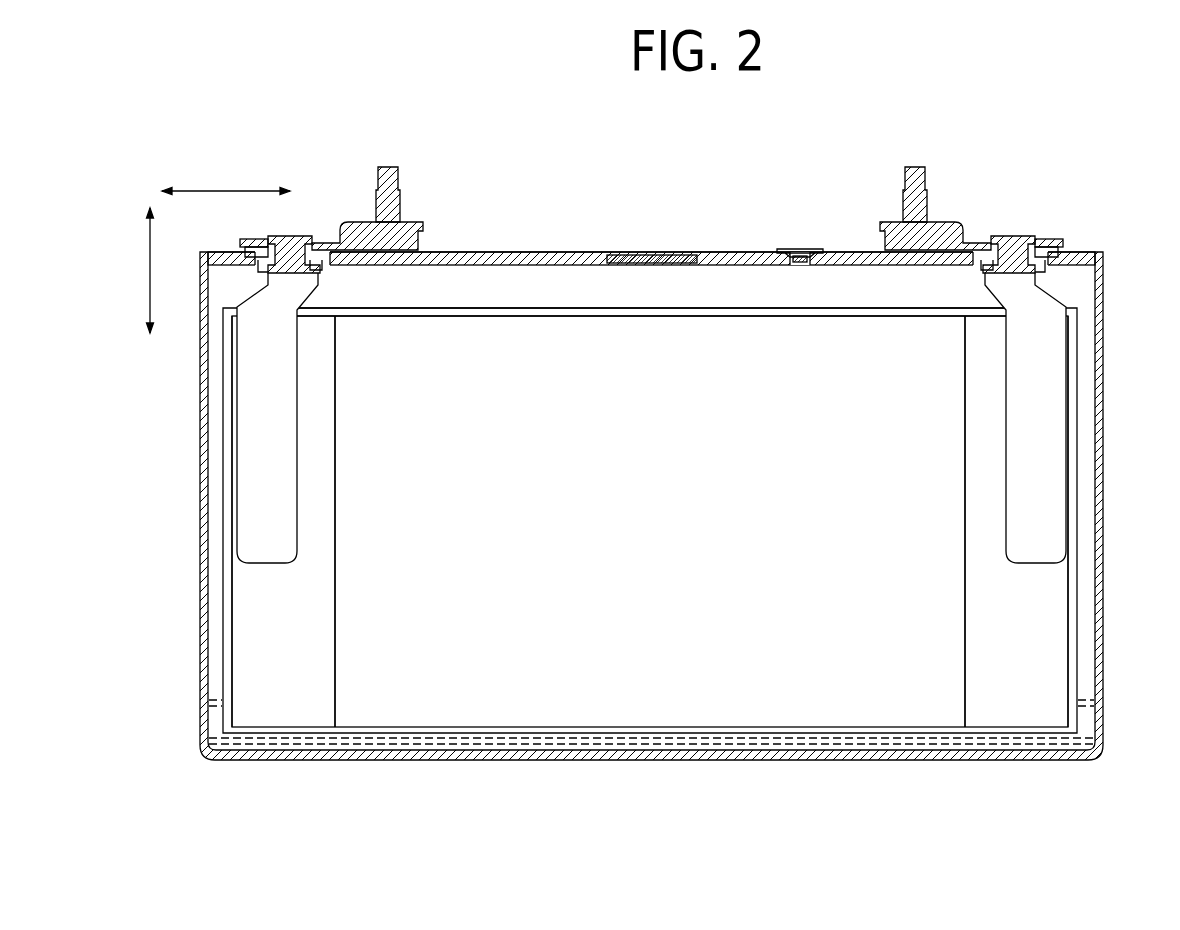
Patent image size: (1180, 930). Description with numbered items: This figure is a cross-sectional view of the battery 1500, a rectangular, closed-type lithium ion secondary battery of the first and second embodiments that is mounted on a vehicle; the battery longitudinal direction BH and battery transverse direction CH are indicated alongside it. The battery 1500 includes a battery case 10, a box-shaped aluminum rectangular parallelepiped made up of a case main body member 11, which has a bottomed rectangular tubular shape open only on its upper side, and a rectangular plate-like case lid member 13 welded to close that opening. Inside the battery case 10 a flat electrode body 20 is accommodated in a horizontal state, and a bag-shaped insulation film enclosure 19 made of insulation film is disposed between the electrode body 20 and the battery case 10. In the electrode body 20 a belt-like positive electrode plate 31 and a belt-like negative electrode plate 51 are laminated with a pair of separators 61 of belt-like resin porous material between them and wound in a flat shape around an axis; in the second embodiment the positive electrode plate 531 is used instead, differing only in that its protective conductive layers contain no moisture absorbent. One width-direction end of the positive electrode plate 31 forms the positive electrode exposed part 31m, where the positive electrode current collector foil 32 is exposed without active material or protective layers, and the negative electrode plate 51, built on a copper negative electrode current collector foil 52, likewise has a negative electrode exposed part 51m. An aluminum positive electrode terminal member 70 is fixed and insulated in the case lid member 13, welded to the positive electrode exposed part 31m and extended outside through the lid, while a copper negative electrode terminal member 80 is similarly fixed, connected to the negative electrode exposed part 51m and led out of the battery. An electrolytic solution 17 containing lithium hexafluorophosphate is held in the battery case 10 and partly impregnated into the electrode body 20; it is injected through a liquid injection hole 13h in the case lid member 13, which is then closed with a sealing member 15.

The battery 1500 is at (1035, 200).
The battery case 10 is at (651, 502).
The case main body member 11 is at (417, 760).
The case lid member 13 is at (538, 252).
The liquid injection hole 13h is at (803, 264).
The sealing member 15 is at (800, 249).
The electrolytic solution 17 is at (613, 680).
The insulation film enclosure 19 is at (713, 308).
The electrode body 20 is at (915, 690).
The positive electrode plate 31 is at (258, 650).
The positive electrode plate 531 is at (277, 418).
The positive electrode exposed part 31m is at (252, 600).
The positive electrode current collector foil 32 is at (258, 683).
The negative electrode plate 51 is at (1050, 650).
The negative electrode exposed part 51m is at (1050, 600).
The negative electrode current collector foil 52 is at (1048, 683).
The separator 61 is at (752, 690).
The positive electrode terminal member 70 is at (350, 222).
The negative electrode terminal member 80 is at (950, 222).
The battery transverse direction CH is at (226, 179).
The battery longitudinal direction BH is at (132, 270).